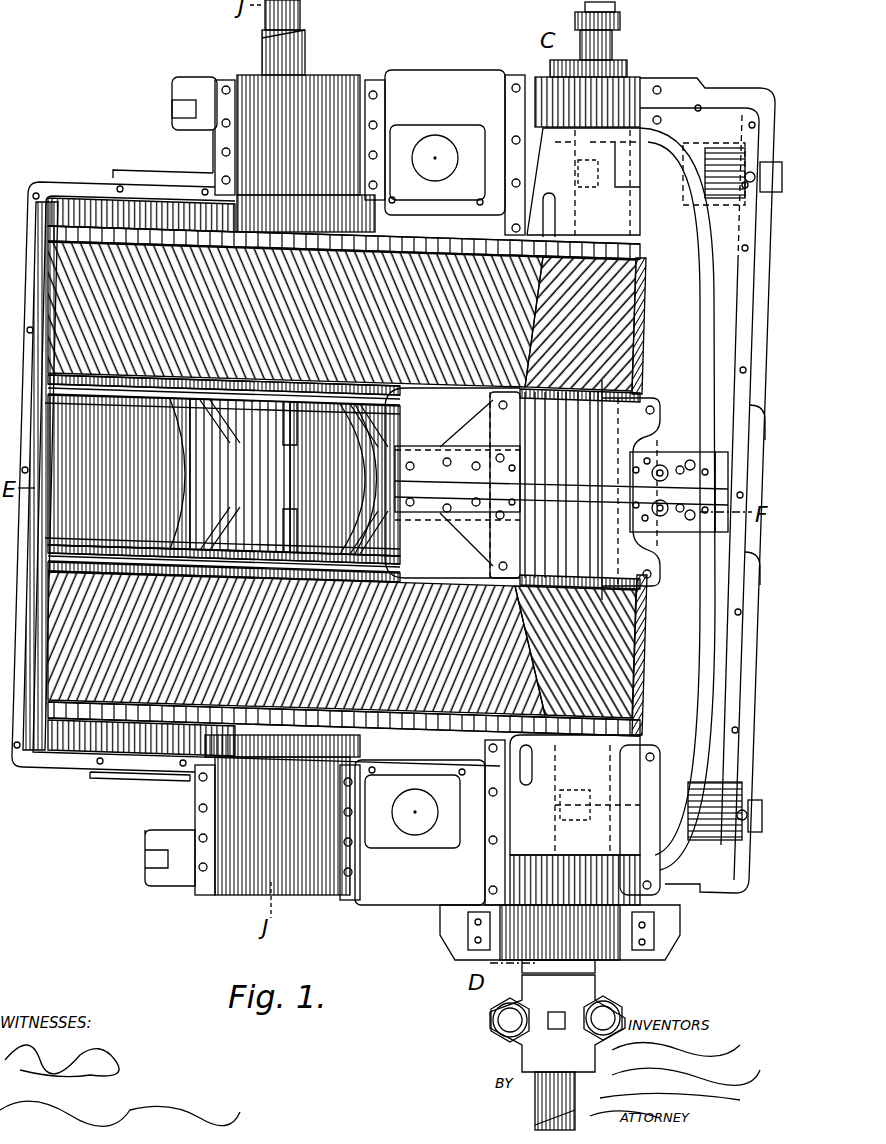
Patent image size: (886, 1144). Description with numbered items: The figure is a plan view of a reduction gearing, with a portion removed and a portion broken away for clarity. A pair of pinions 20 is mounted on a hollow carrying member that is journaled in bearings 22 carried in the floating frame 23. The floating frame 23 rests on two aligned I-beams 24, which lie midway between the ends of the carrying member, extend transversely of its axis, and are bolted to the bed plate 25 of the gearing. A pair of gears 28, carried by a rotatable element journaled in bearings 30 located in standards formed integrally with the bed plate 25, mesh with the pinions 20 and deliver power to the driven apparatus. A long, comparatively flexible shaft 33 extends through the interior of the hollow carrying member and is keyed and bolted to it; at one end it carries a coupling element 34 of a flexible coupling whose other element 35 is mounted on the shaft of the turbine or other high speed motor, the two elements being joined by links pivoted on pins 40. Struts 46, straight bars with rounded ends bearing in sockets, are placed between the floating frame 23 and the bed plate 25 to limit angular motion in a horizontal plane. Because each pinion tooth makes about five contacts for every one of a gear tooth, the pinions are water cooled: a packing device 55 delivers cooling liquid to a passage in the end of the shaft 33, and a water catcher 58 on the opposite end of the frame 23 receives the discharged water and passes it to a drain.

The pinions 20 is at (640, 350).
The bearings 22 is at (575, 105).
The floating frame 23 is at (665, 637).
The I-beams 24 is at (556, 483).
The bed plate 25 is at (72, 764).
The gears 28 is at (110, 198).
The bearings 30 is at (258, 105).
The shaft 33 is at (590, 965).
The coupling element 34 is at (557, 1023).
The coupling element 35 is at (555, 1087).
The pins 40 is at (508, 1022).
The struts 46 is at (706, 148).
The packing device 55 is at (615, 45).
The water catcher 58 is at (455, 935).